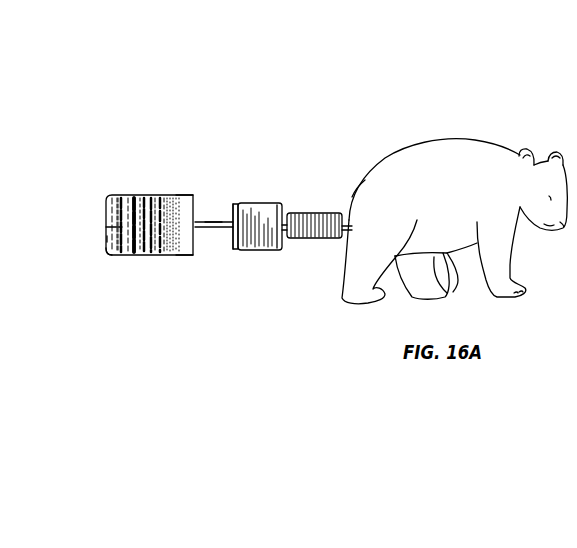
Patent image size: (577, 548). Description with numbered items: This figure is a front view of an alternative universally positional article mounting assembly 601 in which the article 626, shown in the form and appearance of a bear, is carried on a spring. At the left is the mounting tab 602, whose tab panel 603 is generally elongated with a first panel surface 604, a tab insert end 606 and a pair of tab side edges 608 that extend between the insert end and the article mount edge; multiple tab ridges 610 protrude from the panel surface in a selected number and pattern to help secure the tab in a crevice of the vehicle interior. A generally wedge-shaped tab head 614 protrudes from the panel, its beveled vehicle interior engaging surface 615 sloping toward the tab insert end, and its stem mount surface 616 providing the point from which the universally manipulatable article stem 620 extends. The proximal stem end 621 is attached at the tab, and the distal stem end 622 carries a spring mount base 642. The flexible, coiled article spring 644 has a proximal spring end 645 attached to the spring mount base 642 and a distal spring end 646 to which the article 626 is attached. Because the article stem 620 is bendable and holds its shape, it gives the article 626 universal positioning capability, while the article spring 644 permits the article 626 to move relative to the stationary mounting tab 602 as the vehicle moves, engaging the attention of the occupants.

The universally positional article mounting assembly 601 is at (421, 54).
The mounting tab 602 is at (158, 257).
The tab panel 603 is at (103, 255).
The first panel surface 604 is at (106, 227).
The tab insert end 606 is at (107, 239).
The tab side edges 608 is at (117, 194).
The tab ridges 610 is at (135, 200).
The tab head 614 is at (180, 193).
The vehicle interior engaging surface 615 is at (179, 256).
The stem mount surface 616 is at (214, 222).
The article stem 620 is at (211, 219).
The proximal stem end 621 is at (236, 203).
The distal stem end 622 is at (234, 233).
The spring mount base 642 is at (282, 249).
The article spring 644 is at (315, 212).
The proximal spring end 645 is at (290, 242).
The article 626 is at (471, 142).
The distal spring end 646 is at (362, 186).